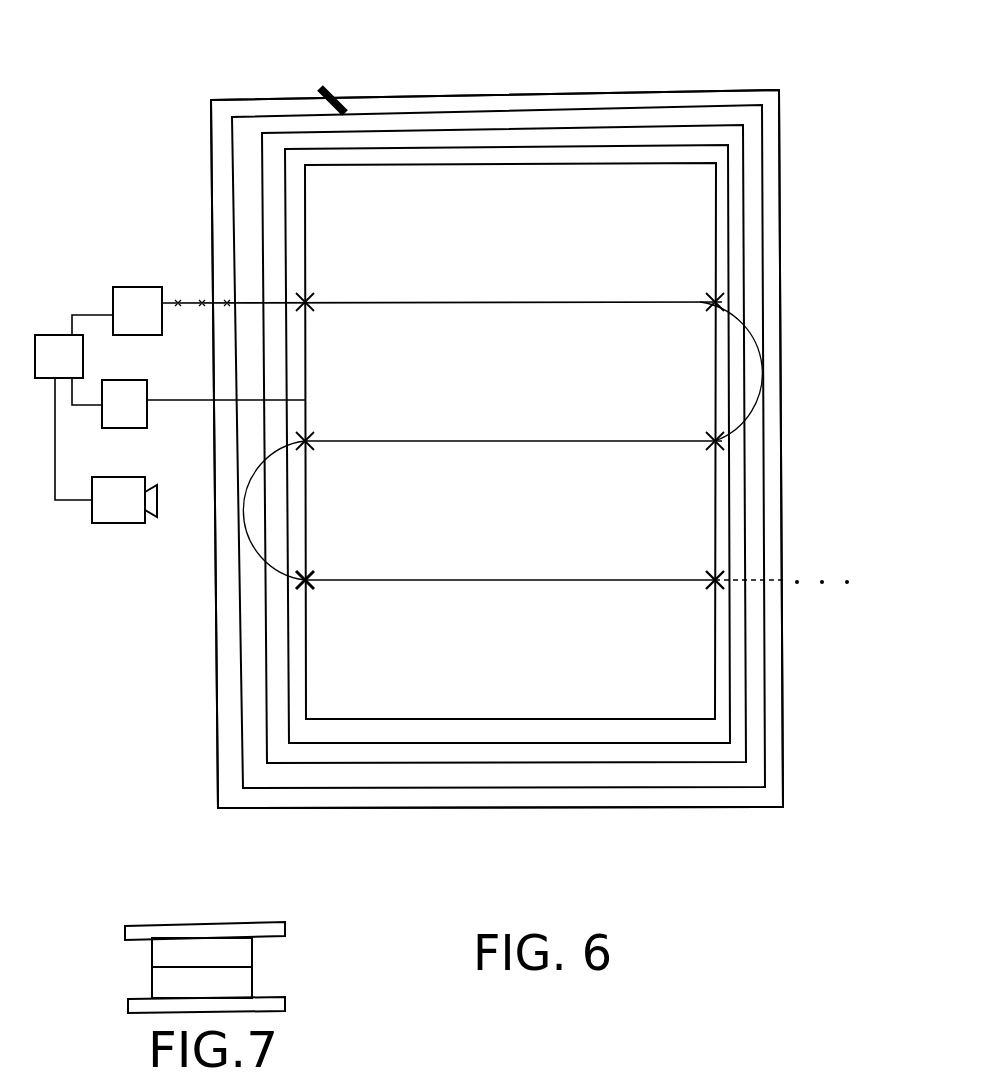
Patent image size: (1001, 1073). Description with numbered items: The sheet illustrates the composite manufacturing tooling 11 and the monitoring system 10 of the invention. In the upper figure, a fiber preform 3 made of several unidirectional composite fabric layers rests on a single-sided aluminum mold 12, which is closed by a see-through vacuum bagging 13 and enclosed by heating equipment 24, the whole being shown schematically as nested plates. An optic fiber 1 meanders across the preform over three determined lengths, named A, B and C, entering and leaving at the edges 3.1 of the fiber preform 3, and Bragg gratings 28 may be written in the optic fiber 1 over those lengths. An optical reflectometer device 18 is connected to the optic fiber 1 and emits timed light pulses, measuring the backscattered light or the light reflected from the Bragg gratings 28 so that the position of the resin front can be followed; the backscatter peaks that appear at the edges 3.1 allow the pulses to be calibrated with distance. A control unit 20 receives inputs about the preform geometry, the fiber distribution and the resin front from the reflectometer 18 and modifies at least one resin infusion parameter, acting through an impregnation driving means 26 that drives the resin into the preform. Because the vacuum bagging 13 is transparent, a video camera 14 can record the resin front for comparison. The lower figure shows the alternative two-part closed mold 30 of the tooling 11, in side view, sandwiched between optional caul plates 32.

In FIG. 6, the optic fiber 1 is at (765, 292).
In FIG. 6, the fiber preform 3 is at (608, 192).
In FIG. 6, the edges of the fiber preform 3.1 is at (303, 308).
In FIG. 6, the system 10 is at (320, 88).
In FIG. 6, the composite manufacturing tooling 11 is at (748, 265).
In FIG. 6, the single-sided aluminum mold 12 is at (733, 202).
In FIG. 6, the vacuum bagging 13 is at (770, 125).
In FIG. 6, the video camera 14 is at (112, 525).
In FIG. 6, the optical reflectometer device 18 is at (133, 298).
In FIG. 6, the control unit 20 is at (53, 335).
In FIG. 6, the heating equipment 24 is at (755, 453).
In FIG. 6, the impregnation driving means 26 is at (135, 428).
In FIG. 6, the Bragg gratings 28 is at (700, 302).
In FIG. 7, the two-part closed mold 30 is at (252, 987).
In FIG. 7, the caul plates 32 is at (212, 923).